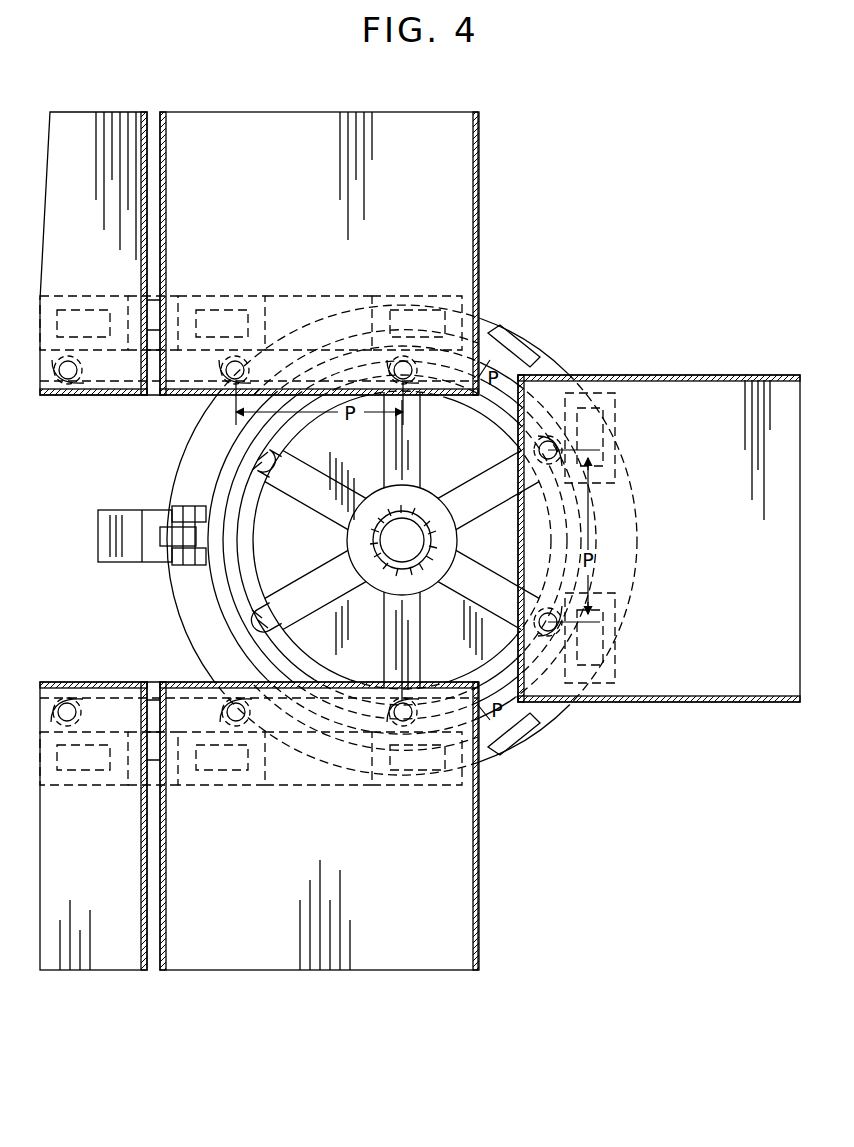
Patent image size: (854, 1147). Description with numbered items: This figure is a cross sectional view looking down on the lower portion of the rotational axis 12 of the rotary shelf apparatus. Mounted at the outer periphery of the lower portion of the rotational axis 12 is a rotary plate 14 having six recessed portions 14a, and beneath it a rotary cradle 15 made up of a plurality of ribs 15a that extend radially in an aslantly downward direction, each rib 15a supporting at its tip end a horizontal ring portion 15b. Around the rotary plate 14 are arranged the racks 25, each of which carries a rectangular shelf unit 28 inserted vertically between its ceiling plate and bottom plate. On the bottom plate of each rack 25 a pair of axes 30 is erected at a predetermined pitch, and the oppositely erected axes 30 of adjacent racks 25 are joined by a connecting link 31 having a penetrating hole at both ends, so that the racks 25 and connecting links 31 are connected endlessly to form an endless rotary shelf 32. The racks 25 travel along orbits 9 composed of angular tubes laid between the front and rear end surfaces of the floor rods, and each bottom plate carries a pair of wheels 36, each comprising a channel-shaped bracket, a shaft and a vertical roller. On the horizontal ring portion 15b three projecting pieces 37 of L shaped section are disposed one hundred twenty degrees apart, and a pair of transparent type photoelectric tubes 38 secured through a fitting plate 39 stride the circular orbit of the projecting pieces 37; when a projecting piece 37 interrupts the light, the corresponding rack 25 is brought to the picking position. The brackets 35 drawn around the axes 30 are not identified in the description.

The orbit 9 is at (163, 285).
The rotational axis 12 is at (382, 545).
The rotary plate 14 is at (245, 605).
The recessed portion 14a is at (252, 456).
The rotary cradle 15 is at (172, 496).
The rib 15a is at (455, 495).
The horizontal ring portion 15b is at (238, 460).
The rack 25 is at (742, 374).
The shelf unit 28 is at (480, 190).
The axis 30 is at (385, 368).
The connecting link 31 is at (153, 397).
The endless rotary shelf 32 is at (484, 950).
The roller bracket 35 is at (392, 360).
The wheel 36 is at (237, 296).
The projecting piece 37 is at (514, 344).
The photoelectric tube 38 is at (205, 508).
The fitting plate 39 is at (150, 562).